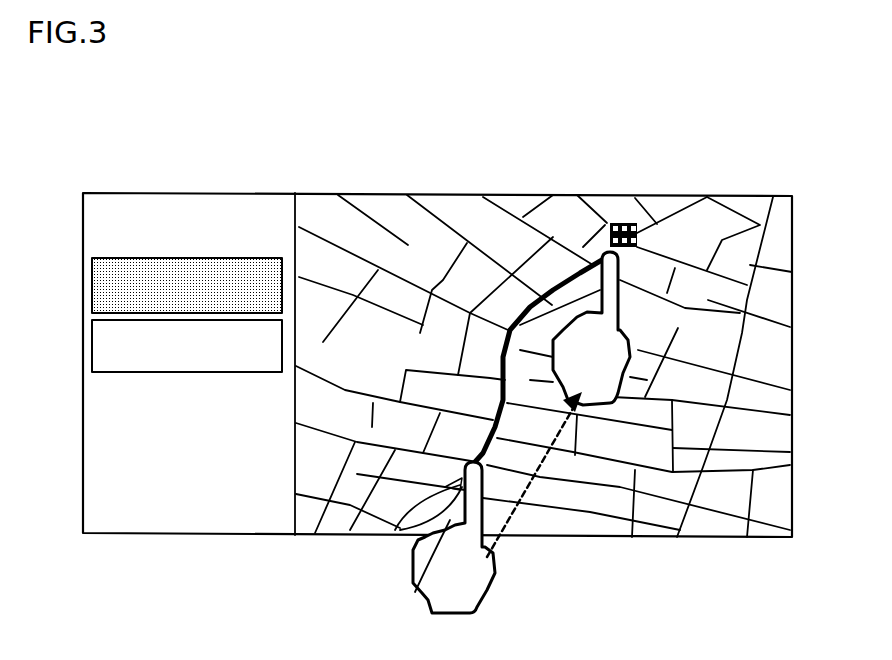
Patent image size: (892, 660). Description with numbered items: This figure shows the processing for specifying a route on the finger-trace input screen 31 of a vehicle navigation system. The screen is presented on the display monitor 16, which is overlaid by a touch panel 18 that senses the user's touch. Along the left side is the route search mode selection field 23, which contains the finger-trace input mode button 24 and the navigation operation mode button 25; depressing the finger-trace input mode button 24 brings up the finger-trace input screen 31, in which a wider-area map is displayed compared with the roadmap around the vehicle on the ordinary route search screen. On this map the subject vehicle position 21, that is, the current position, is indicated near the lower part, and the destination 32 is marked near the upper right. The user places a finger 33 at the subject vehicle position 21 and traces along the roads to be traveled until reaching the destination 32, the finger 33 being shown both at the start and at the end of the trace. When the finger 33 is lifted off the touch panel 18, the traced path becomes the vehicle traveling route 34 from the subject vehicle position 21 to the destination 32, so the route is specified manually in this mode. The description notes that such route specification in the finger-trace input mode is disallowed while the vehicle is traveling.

The display monitor 16 is at (703, 196).
The touch panel 18 is at (437, 320).
The subject vehicle position 21 is at (402, 530).
The route search mode selection field 23 is at (188, 193).
The finger-trace input mode button 24 is at (92, 292).
The navigation operation mode button 25 is at (92, 343).
The finger-trace input screen 31 is at (498, 195).
The destination 32 is at (628, 223).
The finger 33 is at (619, 303).
The vehicle traveling route 34 is at (569, 300).